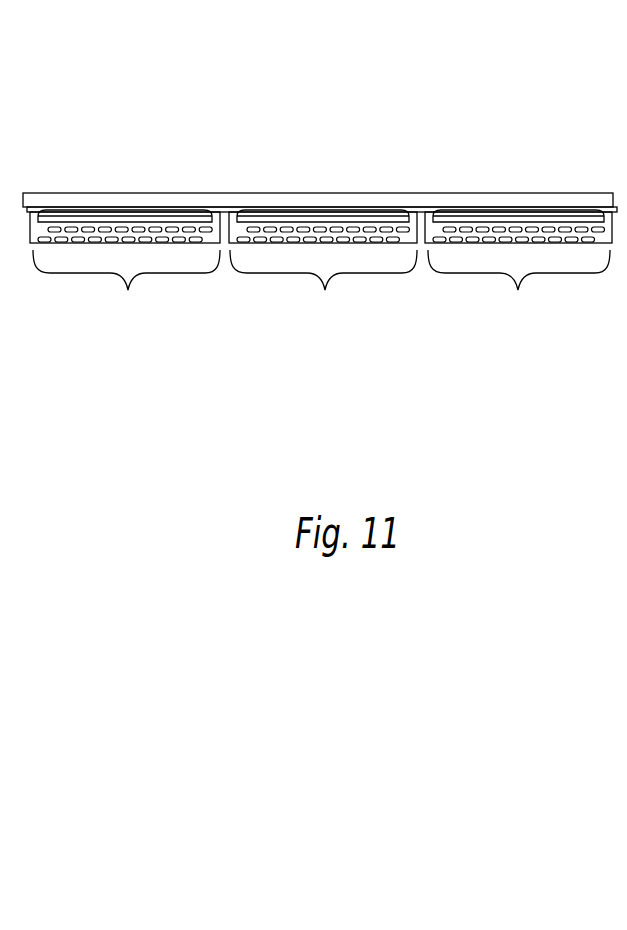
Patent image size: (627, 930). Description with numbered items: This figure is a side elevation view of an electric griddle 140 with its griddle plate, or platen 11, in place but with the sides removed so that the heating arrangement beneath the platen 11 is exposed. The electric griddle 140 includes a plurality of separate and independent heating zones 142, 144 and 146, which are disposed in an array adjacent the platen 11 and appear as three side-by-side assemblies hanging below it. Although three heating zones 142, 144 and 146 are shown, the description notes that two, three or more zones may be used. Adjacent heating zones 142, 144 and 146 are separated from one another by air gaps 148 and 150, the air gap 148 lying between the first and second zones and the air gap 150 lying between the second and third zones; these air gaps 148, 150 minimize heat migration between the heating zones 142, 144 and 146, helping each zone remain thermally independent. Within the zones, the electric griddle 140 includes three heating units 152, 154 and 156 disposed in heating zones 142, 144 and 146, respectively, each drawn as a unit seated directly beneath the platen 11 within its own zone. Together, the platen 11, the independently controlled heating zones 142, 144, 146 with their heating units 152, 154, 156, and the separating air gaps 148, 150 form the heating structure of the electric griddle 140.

The platen 11 is at (62, 202).
The electric griddle 140 is at (442, 118).
The heating zone 142 is at (128, 290).
The heating zone 144 is at (325, 290).
The heating zone 146 is at (518, 290).
The air gap 148 is at (224, 272).
The air gap 150 is at (425, 266).
The heating unit 152 is at (134, 218).
The heating unit 154 is at (315, 218).
The heating unit 156 is at (523, 218).